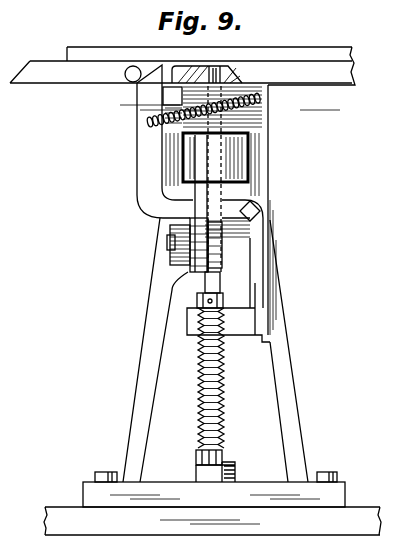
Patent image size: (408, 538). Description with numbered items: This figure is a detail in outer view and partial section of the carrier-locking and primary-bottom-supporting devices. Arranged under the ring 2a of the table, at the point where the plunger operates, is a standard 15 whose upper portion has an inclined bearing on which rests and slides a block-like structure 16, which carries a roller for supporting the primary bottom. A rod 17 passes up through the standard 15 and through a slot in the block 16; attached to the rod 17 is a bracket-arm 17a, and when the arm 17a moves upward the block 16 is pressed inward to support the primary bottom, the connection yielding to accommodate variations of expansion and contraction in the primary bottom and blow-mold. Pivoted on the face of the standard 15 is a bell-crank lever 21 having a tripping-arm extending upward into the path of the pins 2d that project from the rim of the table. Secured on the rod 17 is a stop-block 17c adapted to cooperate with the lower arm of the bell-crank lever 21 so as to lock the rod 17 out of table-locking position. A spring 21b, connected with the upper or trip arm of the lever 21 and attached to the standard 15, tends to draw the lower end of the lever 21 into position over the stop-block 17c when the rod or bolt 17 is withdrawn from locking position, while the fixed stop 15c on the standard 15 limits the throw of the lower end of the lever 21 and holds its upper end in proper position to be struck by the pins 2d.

The ring 2a is at (342, 78).
The pins 2d is at (133, 66).
The standard 15 is at (287, 392).
The fixed stop 15c is at (175, 95).
The block-like structure 16 is at (237, 163).
The rod 17 is at (220, 287).
The bracket-arm 17a is at (232, 453).
The stop-block 17c is at (240, 318).
The bell-crank lever 21 is at (150, 177).
The spring 21b is at (272, 112).